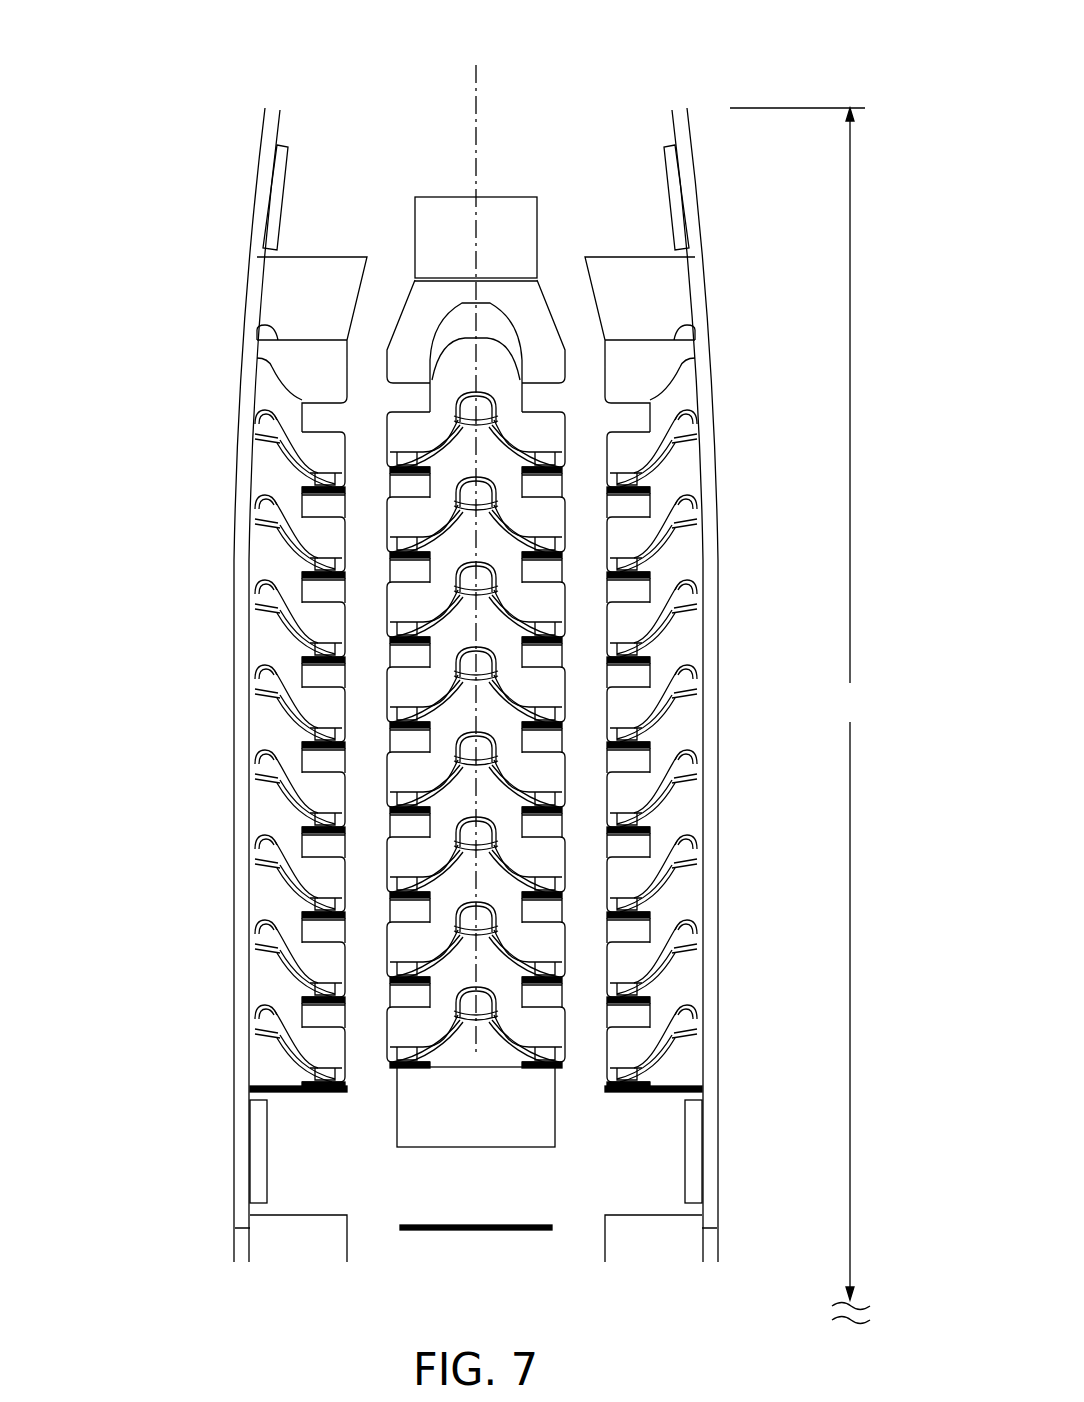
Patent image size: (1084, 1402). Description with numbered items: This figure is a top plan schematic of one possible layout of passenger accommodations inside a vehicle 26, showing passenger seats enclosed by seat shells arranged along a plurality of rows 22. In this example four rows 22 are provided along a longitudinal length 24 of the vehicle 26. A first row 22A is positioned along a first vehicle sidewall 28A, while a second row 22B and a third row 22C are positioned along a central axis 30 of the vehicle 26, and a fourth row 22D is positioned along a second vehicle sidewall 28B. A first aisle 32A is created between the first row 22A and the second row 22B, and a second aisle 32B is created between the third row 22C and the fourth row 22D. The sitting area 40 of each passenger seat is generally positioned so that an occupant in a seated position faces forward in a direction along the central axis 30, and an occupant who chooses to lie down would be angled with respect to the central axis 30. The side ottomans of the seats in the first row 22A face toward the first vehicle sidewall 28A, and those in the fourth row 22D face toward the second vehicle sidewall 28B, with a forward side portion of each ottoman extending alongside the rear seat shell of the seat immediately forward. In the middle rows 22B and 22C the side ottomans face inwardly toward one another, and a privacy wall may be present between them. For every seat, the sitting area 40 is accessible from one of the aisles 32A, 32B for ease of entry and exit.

The vehicle 26 is at (722, 82).
The first vehicle sidewall 28A is at (684, 110).
The second vehicle sidewall 28B is at (268, 110).
The central axis 30 is at (478, 87).
The first row 22A is at (639, 250).
The second row 22B is at (512, 328).
The third row 22C is at (440, 328).
The fourth row 22D is at (313, 250).
The first aisle 32A is at (583, 577).
The second aisle 32B is at (369, 577).
The sitting area 40 is at (320, 878).
The longitudinal length 24 is at (800, 716).
The rows 22 is at (330, 1052).